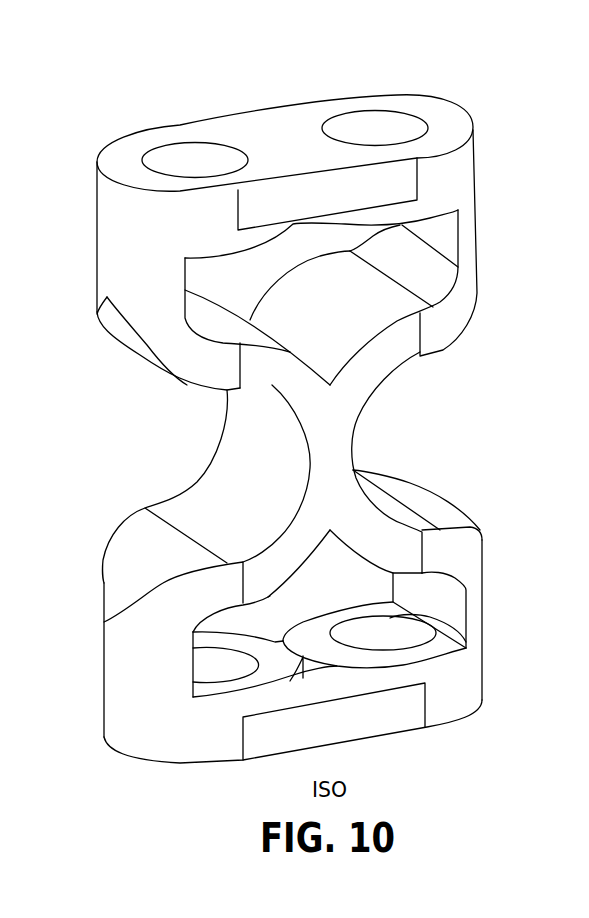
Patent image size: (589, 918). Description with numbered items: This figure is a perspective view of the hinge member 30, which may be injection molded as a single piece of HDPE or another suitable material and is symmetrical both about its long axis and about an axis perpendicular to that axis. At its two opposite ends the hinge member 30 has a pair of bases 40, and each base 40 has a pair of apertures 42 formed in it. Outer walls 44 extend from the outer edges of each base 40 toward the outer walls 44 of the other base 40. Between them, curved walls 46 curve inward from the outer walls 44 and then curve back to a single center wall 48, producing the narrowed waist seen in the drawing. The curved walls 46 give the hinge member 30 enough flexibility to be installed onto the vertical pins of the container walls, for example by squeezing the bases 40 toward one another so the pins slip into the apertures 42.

The hinge member 30 is at (452, 90).
The base 40 is at (475, 142).
The aperture 42 is at (183, 161).
The outer wall 44 is at (95, 240).
The curved wall 46 is at (185, 382).
The center wall 48 is at (353, 437).